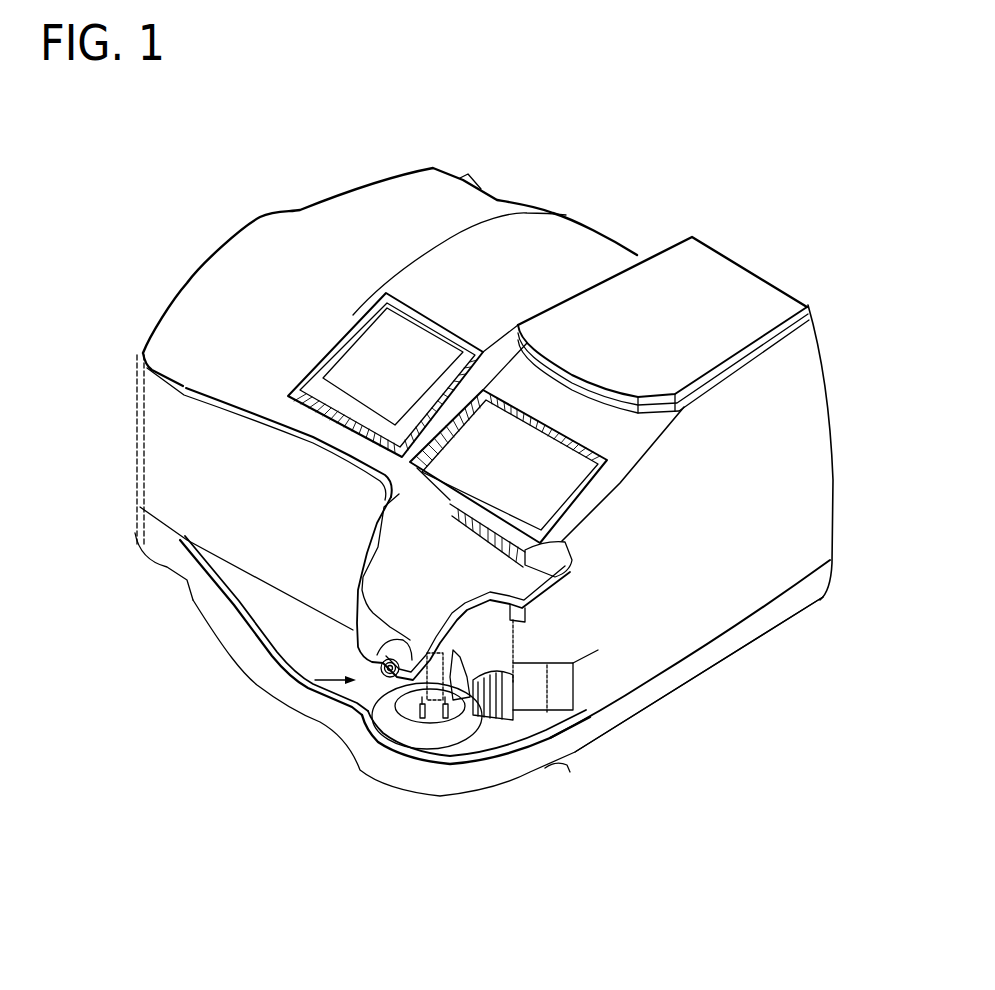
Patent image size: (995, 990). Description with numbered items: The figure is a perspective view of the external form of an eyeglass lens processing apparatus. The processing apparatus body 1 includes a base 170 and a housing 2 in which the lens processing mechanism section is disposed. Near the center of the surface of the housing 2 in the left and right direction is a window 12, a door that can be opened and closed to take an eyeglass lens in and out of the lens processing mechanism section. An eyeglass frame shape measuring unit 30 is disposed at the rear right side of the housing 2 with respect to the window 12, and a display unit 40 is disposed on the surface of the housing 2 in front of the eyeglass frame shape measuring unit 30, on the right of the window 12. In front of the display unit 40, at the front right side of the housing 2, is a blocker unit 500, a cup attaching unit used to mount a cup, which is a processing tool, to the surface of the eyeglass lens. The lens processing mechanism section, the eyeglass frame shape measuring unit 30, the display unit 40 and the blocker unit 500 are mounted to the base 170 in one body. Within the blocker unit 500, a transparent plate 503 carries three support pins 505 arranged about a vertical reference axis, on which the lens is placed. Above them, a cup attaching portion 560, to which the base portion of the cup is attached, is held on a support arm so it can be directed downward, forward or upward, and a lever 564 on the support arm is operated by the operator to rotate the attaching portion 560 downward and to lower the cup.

The processing apparatus body 1 is at (216, 210).
The housing 2 is at (178, 352).
The window (door) 12 is at (377, 347).
The eyeglass frame shape measuring unit 30 is at (733, 290).
The display unit 40 is at (543, 473).
The base 170 is at (680, 678).
The blocker unit (cup attaching unit) 500 is at (492, 707).
The transparent plate 503 is at (403, 730).
The support pins (lens support portions) 505 is at (457, 720).
The cup attaching portion 560 is at (350, 710).
The lever 564 is at (570, 720).